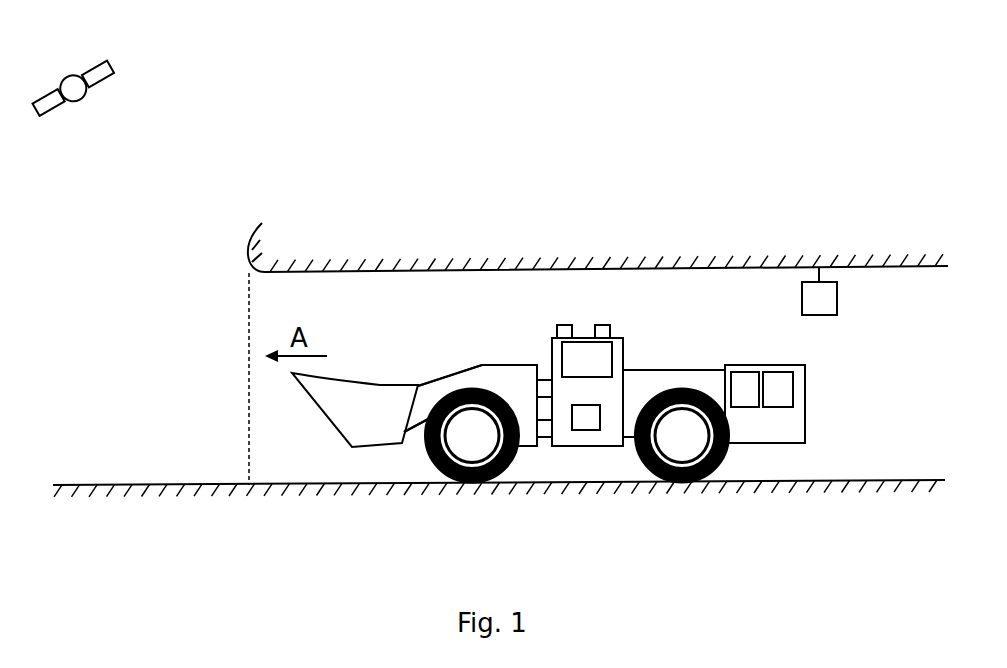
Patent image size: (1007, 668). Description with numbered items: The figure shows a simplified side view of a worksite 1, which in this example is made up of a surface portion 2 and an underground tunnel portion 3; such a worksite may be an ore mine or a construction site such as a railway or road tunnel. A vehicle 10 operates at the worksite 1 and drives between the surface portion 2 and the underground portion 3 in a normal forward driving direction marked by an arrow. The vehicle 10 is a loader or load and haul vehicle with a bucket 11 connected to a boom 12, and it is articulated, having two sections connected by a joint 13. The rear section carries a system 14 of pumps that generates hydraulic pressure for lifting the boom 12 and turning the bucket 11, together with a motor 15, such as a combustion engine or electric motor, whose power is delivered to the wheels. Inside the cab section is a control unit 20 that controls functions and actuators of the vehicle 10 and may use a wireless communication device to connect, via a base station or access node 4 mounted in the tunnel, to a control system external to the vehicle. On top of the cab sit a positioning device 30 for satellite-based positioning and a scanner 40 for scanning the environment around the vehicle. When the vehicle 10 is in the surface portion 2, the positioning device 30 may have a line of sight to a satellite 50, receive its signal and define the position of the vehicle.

The worksite 1 is at (332, 160).
The surface portion 2 is at (74, 389).
The underground portion 3 is at (916, 391).
The base station or access node 4 is at (812, 311).
The vehicle 10 is at (548, 411).
The bucket 11 is at (355, 428).
The boom 12 is at (455, 388).
The joint 13 is at (545, 386).
The system of pumps 14 is at (747, 384).
The motor 15 is at (773, 385).
The control unit 20 is at (583, 418).
The positioning device 30 is at (601, 325).
The scanner 40 is at (560, 325).
The satellite 50 is at (70, 87).